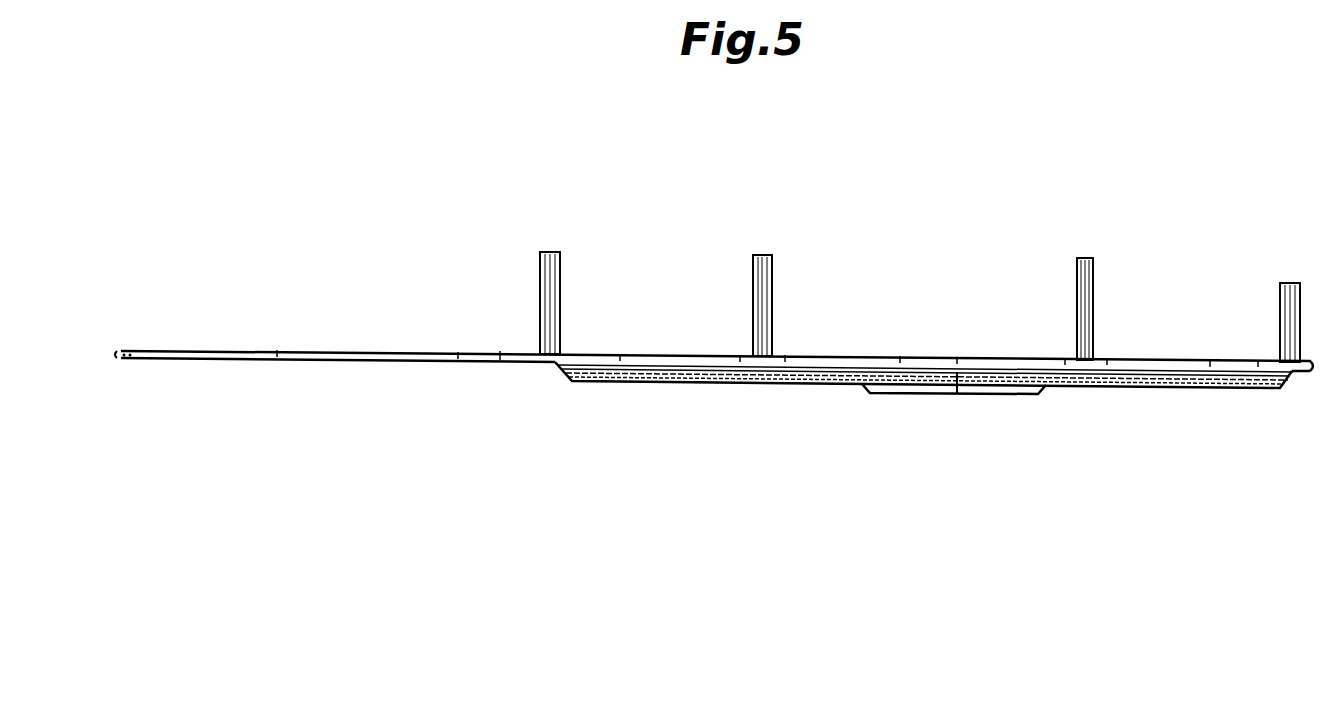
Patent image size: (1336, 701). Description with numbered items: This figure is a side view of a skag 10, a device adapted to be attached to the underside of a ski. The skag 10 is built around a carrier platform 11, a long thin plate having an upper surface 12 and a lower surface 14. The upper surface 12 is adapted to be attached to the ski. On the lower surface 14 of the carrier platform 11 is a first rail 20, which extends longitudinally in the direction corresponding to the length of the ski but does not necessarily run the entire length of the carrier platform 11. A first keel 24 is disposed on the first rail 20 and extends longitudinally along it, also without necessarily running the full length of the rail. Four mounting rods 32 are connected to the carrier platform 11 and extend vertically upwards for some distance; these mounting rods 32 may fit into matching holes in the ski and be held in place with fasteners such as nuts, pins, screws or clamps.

The skag 10 is at (476, 186).
The carrier platform 11 is at (501, 356).
The upper surface 12 is at (376, 343).
The lower surface 14 is at (432, 372).
The first rail 20 is at (838, 386).
The first keel 24 is at (975, 405).
The mounting rods 32 is at (746, 242).